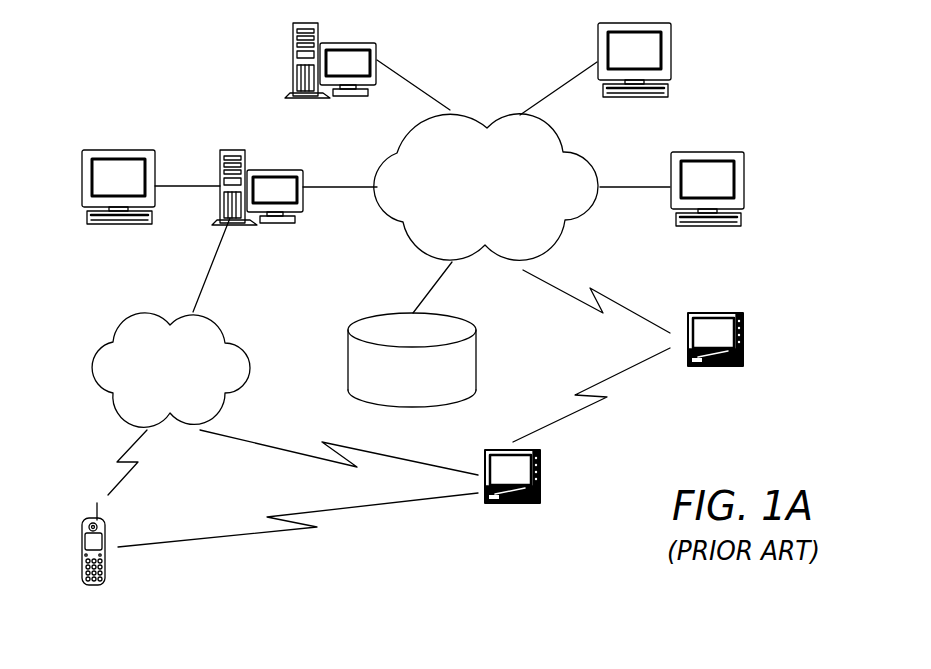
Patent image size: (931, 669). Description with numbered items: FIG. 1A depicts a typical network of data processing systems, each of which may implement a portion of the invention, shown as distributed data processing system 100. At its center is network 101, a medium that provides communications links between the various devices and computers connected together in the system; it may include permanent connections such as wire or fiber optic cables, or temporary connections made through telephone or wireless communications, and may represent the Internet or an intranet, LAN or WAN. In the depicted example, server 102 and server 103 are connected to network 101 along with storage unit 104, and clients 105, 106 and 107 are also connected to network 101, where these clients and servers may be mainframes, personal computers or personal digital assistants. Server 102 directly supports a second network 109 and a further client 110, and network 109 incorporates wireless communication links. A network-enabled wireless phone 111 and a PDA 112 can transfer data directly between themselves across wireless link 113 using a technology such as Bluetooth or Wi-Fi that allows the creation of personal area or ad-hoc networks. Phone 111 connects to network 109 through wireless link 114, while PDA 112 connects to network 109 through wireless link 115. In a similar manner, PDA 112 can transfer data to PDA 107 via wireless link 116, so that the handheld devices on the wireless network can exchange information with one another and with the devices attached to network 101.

The distributed data processing system 100 is at (150, 72).
The network 101 is at (502, 210).
The server 102 is at (225, 148).
The server 103 is at (293, 62).
The storage unit 104 is at (347, 365).
The client 105 is at (672, 57).
The client 106 is at (745, 185).
The PDA 107 is at (743, 338).
The network 109 is at (187, 390).
The client 110 is at (118, 148).
The network-enabled phone 111 is at (103, 563).
The PDA 112 is at (540, 477).
The wireless link 113 is at (228, 533).
The wireless link 114 is at (127, 480).
The wireless link 115 is at (253, 442).
The wireless link 116 is at (563, 413).